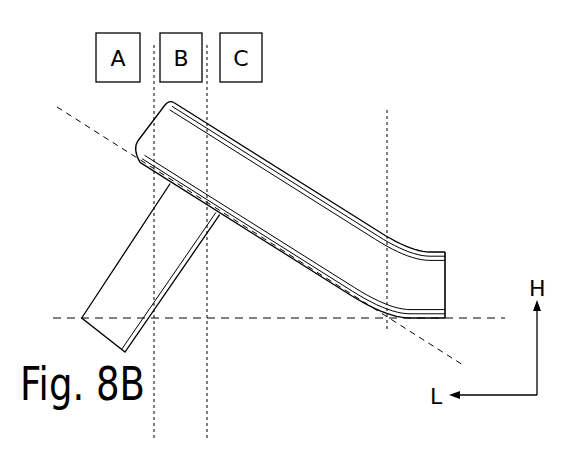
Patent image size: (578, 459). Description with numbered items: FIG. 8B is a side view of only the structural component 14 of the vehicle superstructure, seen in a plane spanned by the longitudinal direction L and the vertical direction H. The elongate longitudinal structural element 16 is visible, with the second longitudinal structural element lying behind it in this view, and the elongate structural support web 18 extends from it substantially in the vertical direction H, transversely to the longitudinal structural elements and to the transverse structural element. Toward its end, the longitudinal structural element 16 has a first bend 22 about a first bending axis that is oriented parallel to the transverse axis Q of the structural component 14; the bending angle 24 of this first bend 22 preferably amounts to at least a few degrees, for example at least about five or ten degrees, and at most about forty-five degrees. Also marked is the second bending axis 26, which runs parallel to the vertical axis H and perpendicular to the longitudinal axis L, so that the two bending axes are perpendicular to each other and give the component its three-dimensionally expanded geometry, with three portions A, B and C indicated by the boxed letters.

The structural component 14 is at (96, 191).
The longitudinal structural element 16 is at (258, 172).
The structural support web 18 is at (120, 294).
The first bend 22 is at (406, 229).
The bending angle 24 is at (265, 250).
The second bending axis 26 is at (392, 130).